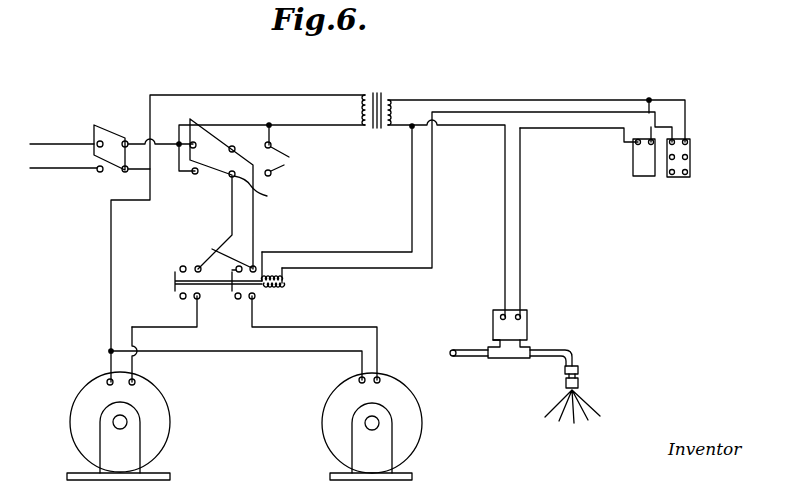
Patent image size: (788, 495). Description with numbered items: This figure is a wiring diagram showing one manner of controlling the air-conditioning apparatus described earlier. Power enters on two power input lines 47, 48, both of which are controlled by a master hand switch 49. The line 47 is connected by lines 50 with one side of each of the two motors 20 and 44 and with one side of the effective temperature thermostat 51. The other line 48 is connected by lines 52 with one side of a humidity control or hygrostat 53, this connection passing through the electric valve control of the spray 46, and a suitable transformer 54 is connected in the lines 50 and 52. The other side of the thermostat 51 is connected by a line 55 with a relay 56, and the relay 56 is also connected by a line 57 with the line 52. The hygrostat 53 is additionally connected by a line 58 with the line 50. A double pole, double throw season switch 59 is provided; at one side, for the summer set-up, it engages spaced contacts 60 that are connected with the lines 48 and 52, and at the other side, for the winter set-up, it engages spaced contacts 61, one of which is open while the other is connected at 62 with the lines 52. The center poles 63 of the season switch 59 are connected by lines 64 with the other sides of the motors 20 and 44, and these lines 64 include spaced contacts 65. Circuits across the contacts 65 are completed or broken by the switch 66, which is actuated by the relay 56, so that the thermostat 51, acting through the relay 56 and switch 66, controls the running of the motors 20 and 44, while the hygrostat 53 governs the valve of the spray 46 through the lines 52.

The motor 20 is at (162, 417).
The motor 44 is at (413, 410).
The spray 46 is at (560, 385).
The power input line 47 is at (50, 168).
The power input line 48 is at (46, 138).
The master hand switch 49 is at (108, 127).
The lines 50 is at (213, 95).
The effective temperature thermostat 51 is at (690, 166).
The lines 52 is at (335, 104).
The hygrostat (humidity control) 53 is at (643, 176).
The transformer 54 is at (391, 111).
The line 55 is at (436, 268).
The relay 56 is at (284, 286).
The line 57 is at (369, 253).
The line 58 is at (688, 120).
The double pole, double throw season switch 59 is at (220, 139).
The spaced contacts 60 is at (196, 175).
The spaced contacts 61 is at (291, 159).
The connection 62 is at (282, 105).
The center poles 63 is at (264, 192).
The lines 64 is at (232, 217).
The spaced contacts 65 is at (214, 250).
The switch 66 is at (175, 281).